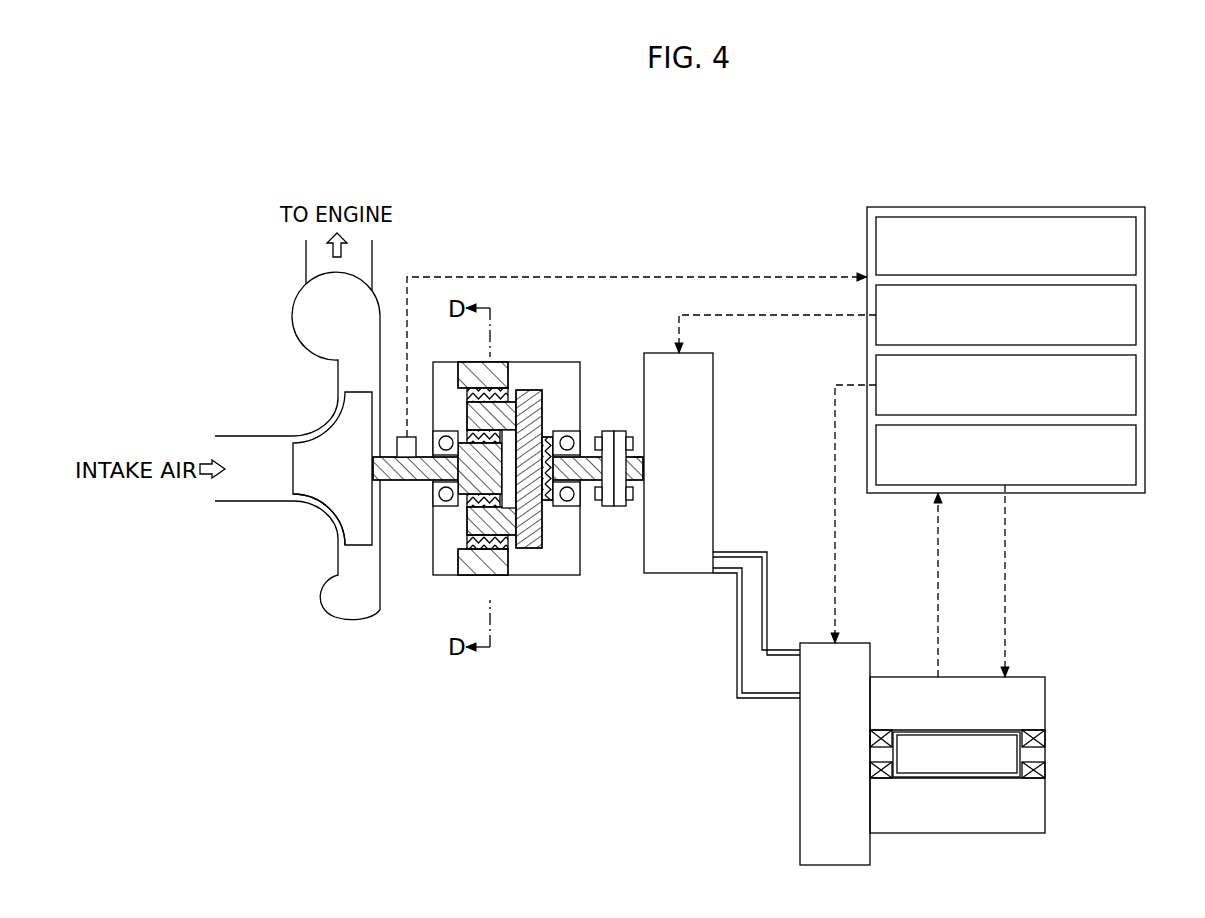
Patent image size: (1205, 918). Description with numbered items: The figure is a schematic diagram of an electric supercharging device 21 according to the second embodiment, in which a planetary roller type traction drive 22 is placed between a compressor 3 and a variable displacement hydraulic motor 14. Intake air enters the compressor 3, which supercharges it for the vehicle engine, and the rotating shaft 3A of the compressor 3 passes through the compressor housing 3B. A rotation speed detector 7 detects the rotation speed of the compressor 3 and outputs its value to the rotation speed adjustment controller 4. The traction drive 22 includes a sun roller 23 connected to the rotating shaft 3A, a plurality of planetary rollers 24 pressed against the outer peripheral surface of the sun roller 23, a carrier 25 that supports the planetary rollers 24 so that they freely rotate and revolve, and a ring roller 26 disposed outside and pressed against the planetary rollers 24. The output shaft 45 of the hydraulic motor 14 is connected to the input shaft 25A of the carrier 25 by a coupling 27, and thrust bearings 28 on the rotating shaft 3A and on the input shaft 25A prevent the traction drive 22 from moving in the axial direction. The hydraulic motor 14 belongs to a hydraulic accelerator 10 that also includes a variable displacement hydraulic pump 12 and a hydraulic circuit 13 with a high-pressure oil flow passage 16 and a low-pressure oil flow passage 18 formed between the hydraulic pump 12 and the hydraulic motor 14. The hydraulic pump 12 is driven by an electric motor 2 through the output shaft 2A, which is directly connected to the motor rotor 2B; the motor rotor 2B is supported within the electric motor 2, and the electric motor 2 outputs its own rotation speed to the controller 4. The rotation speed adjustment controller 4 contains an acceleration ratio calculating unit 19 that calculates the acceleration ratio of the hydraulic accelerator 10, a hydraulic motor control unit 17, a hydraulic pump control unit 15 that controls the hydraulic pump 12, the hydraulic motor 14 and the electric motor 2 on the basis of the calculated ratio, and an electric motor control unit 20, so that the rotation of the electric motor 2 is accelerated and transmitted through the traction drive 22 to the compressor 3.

The electric motor 2 is at (984, 775).
The output shaft 2A is at (885, 755).
The motor rotor 2B is at (962, 763).
The compressor 3 is at (362, 510).
The rotating shaft 3A is at (412, 482).
The compressor housing 3B is at (325, 520).
The rotation speed adjustment controller 4 is at (1028, 332).
The rotation speed detector 7 is at (412, 436).
The hydraulic accelerator 10 is at (772, 263).
The variable displacement hydraulic pump 12 is at (800, 787).
The hydraulic circuit 13 is at (705, 702).
The variable displacement hydraulic motor 14 is at (715, 393).
The hydraulic pump control unit 15 is at (1136, 385).
The high-pressure oil flow passage 16 is at (742, 550).
The hydraulic motor control unit 17 is at (1136, 315).
The low-pressure oil flow passage 18 is at (737, 643).
The acceleration ratio calculating unit 19 is at (1136, 247).
The electric motor control unit 20 is at (1136, 455).
The electric supercharging device 21 is at (523, 178).
The planetary roller type traction drive 22 is at (547, 360).
The sun roller 23 is at (480, 488).
The planetary rollers 24 is at (487, 533).
The carrier 25 is at (533, 548).
The input shaft 25A is at (563, 477).
The ring roller 26 is at (503, 370).
The coupling 27 is at (617, 427).
The thrust bearings 28 is at (557, 428).
The output shaft 45 is at (635, 470).